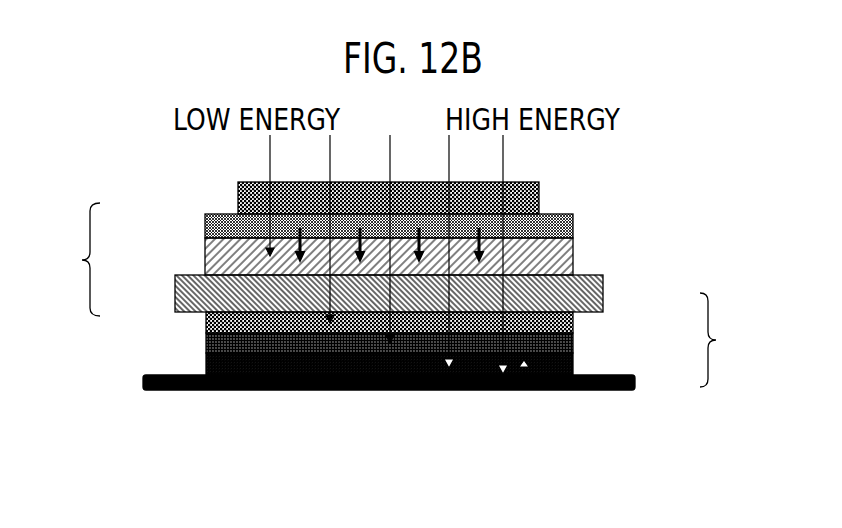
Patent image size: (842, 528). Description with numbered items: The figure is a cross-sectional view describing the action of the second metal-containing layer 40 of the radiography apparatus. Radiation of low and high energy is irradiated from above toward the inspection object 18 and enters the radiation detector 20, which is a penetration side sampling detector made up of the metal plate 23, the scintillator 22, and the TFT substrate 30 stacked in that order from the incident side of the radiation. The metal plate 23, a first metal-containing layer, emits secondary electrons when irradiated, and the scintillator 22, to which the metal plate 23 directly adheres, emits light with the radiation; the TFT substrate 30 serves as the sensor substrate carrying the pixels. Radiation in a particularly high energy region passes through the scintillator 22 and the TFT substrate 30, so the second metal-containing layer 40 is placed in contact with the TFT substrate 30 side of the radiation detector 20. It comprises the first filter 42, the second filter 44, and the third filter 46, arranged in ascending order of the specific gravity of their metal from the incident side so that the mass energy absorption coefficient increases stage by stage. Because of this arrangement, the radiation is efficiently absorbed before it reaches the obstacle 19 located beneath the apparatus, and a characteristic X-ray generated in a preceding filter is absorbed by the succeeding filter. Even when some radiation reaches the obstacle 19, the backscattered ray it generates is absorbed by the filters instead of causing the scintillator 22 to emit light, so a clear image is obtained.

The inspection object 18 is at (541, 193).
The radiation detector 20 is at (72, 259).
The metal plate 23 is at (205, 222).
The scintillator 22 is at (205, 257).
The TFT substrate 30 is at (176, 292).
The second metal-containing layer 40 is at (725, 340).
The first filter 42 is at (573, 318).
The second filter 44 is at (573, 343).
The third filter 46 is at (573, 368).
The obstacle 19 is at (548, 390).